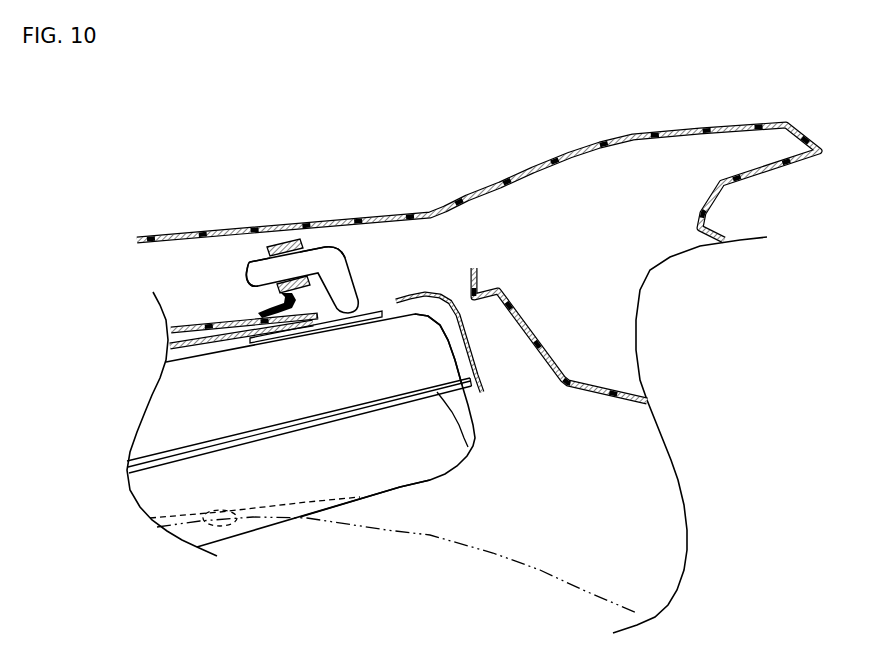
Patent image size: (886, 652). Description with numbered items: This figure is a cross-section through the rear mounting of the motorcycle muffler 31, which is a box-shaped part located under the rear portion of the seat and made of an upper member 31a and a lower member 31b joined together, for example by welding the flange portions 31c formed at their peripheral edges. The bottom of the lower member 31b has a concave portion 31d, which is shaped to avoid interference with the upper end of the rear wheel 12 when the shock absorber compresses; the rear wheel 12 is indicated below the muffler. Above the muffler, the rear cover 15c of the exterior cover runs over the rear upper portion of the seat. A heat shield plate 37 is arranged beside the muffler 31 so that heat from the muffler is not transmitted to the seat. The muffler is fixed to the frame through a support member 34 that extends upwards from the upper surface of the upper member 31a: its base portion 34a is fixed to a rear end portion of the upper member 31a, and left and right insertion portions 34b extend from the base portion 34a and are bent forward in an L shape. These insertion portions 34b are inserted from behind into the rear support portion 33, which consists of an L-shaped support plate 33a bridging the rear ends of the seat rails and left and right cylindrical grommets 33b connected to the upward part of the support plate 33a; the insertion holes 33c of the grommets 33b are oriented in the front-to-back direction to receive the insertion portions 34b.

The rear wheel 12 is at (497, 553).
The rear cover 15c is at (667, 132).
The muffler 31 is at (482, 415).
The upper member 31a is at (448, 342).
The lower member 31b is at (450, 470).
The flange portions 31c is at (471, 446).
The concave portion 31d is at (237, 510).
The rear support portion 33 is at (269, 233).
The support plate 33a is at (198, 315).
The cylindrical grommets 33b is at (287, 240).
The insertion holes 33c is at (263, 263).
The support member 34 is at (352, 253).
The base portion 34a is at (371, 308).
The insertion portions 34b is at (310, 248).
The heat shield plate 37 is at (422, 284).